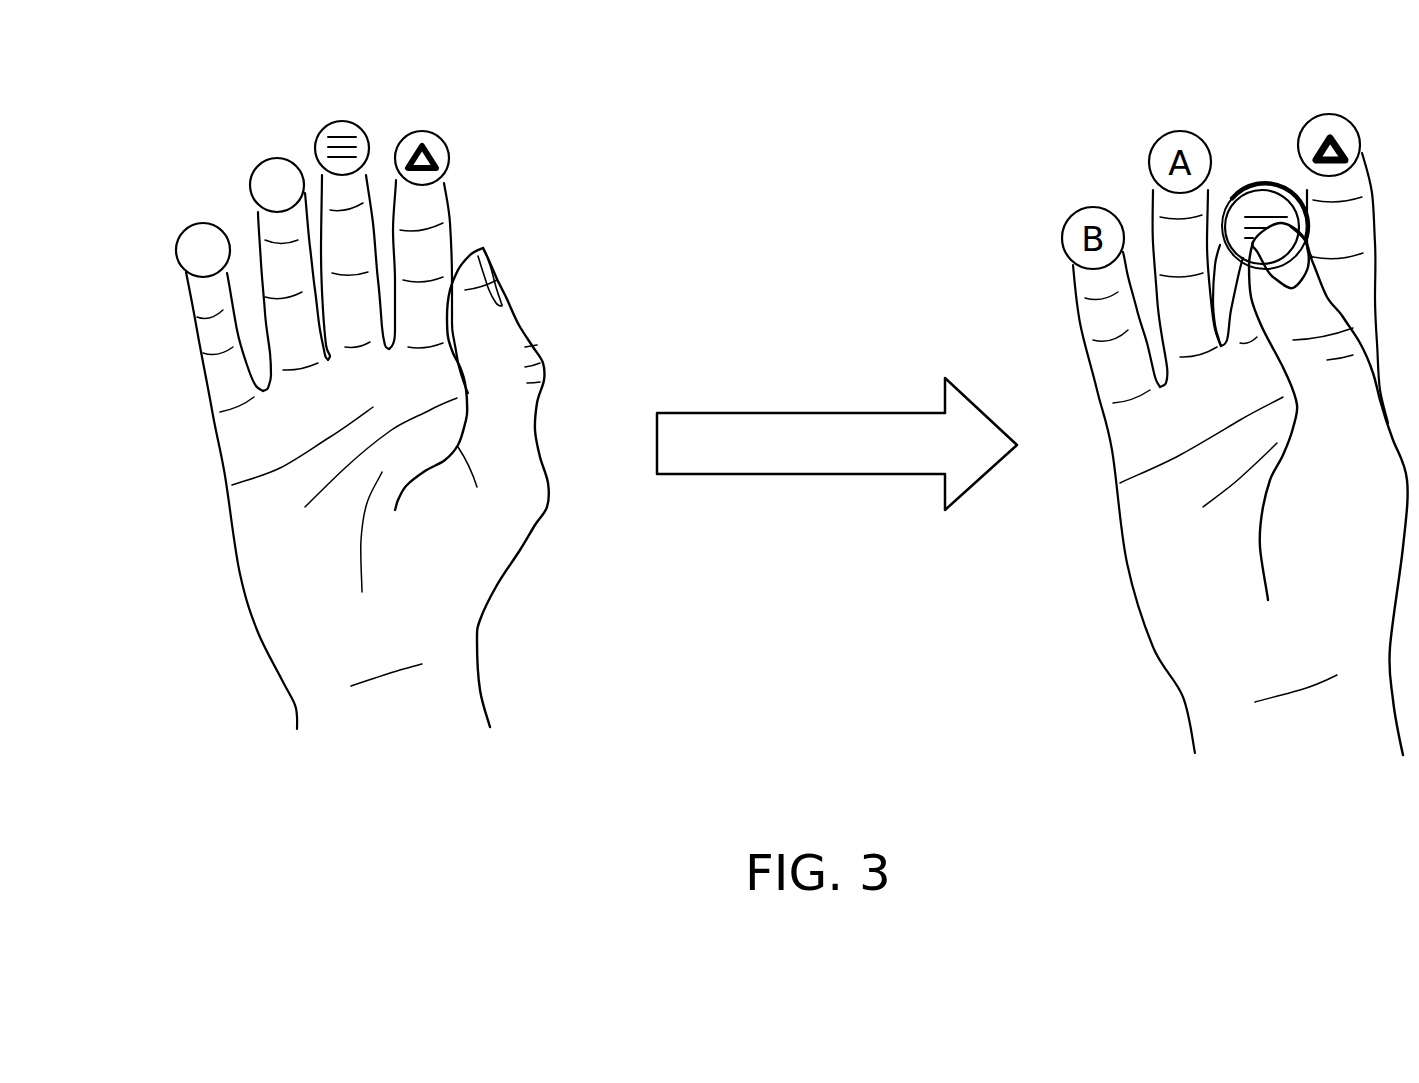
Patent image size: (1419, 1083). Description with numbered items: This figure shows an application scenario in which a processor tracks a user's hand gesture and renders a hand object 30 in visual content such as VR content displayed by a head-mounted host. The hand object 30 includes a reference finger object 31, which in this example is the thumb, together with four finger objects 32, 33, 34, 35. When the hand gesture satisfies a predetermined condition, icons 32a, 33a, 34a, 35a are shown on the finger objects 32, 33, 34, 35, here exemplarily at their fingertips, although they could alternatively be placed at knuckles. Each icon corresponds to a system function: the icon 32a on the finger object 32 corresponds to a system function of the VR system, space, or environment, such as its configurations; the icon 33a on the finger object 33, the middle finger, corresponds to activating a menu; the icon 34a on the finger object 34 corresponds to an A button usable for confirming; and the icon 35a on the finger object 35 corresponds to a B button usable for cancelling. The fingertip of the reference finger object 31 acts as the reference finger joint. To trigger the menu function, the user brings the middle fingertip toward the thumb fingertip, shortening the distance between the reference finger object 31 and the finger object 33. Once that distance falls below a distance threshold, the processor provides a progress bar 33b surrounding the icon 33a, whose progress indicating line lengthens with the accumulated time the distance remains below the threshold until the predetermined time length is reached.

The hand object 30 is at (362, 701).
The reference finger object 31 is at (507, 287).
The finger object 32 is at (437, 203).
The icon 32a is at (433, 140).
The finger object 33 is at (360, 187).
The icon 33a is at (343, 130).
The progress bar 33b is at (1268, 185).
The finger object 34 is at (270, 227).
The icon 34a is at (275, 157).
The finger object 35 is at (192, 297).
The icon 35a is at (195, 226).